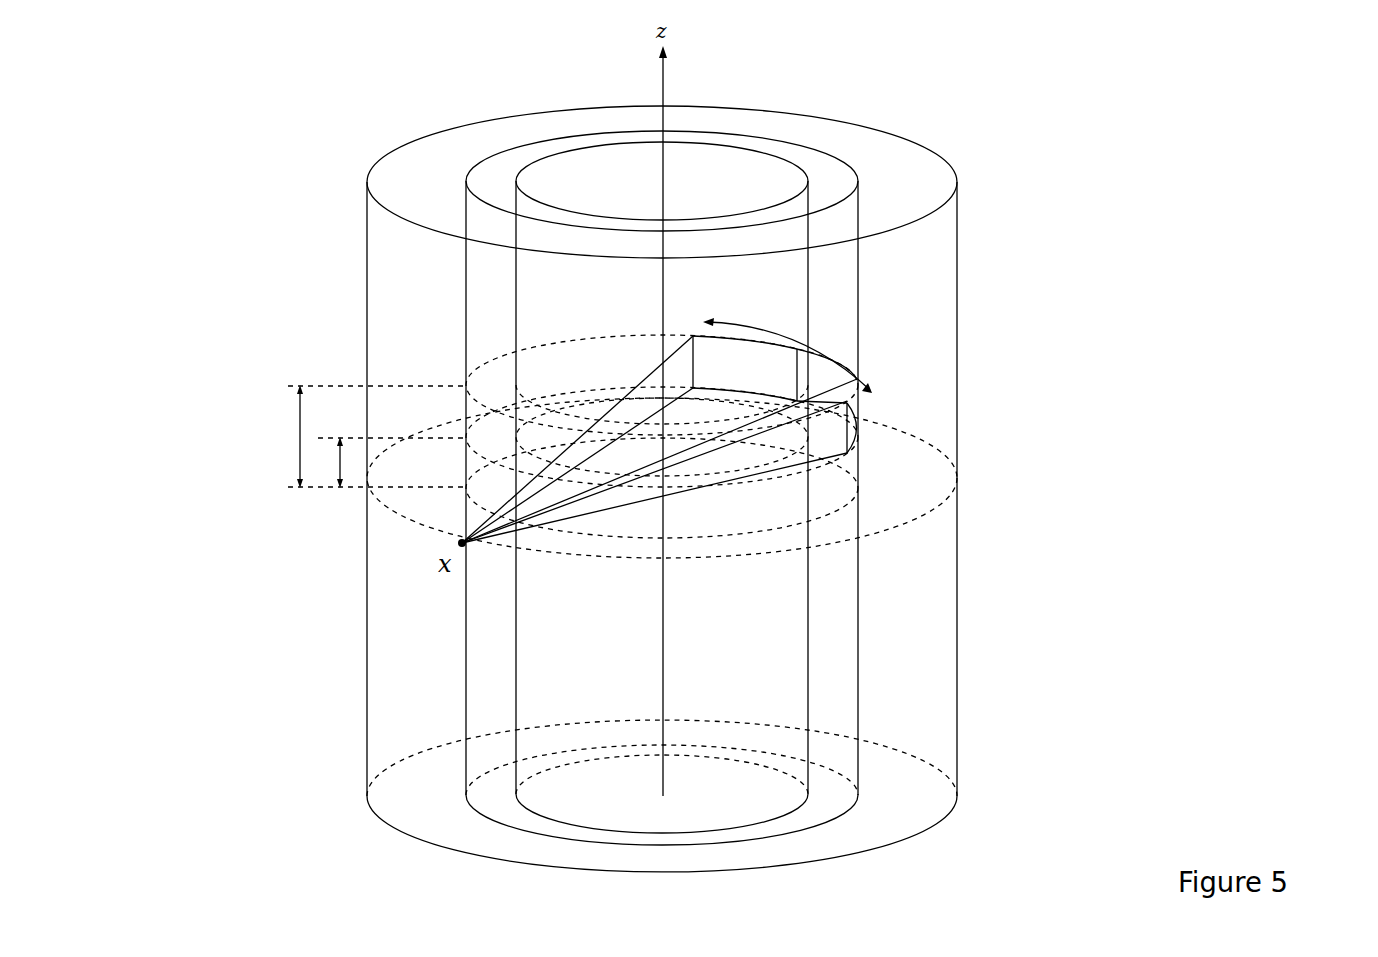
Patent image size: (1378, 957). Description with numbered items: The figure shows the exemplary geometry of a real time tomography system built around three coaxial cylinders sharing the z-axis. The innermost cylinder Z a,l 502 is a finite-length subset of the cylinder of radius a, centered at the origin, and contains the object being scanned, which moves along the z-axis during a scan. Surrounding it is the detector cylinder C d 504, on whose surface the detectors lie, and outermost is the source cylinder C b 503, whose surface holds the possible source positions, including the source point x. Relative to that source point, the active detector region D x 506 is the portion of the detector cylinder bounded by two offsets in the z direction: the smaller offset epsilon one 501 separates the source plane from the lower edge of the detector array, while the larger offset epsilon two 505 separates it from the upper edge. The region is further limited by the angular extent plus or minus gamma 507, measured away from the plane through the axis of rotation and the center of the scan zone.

The source-detector offset epsilon 1 501 is at (338, 470).
The cylinder Z a,l 502 is at (810, 703).
The source cylinder C b 503 is at (959, 600).
The detector cylinder C d 504 is at (858, 651).
The source-detector offset epsilon 2 505 is at (267, 432).
The active detector region D x 506 is at (982, 407).
The angular extent gamma 507 is at (823, 340).